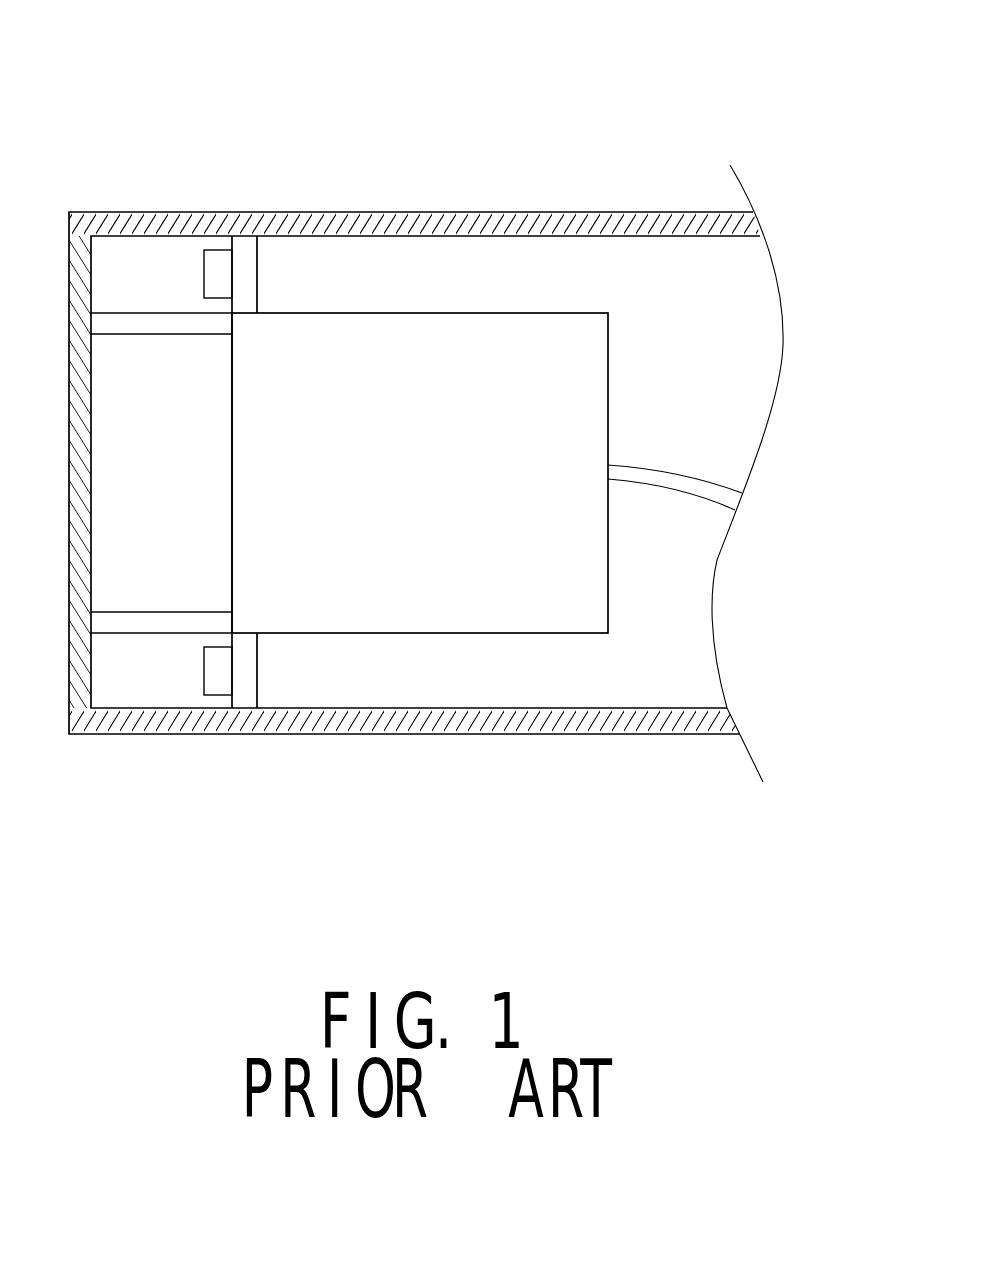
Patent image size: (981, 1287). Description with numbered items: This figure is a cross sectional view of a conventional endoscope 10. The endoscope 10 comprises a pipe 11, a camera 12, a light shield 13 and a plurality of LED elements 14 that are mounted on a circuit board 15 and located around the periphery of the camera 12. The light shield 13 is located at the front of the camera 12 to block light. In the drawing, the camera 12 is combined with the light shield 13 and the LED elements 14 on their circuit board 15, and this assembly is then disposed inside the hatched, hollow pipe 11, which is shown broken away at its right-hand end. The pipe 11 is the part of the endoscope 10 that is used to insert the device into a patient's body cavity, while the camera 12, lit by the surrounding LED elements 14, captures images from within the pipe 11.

The conventional endoscope 10 is at (410, 145).
The pipe 11 is at (553, 226).
The camera 12 is at (558, 408).
The light shield 13 is at (148, 622).
The LED elements 14 is at (217, 277).
The circuit board 15 is at (245, 257).